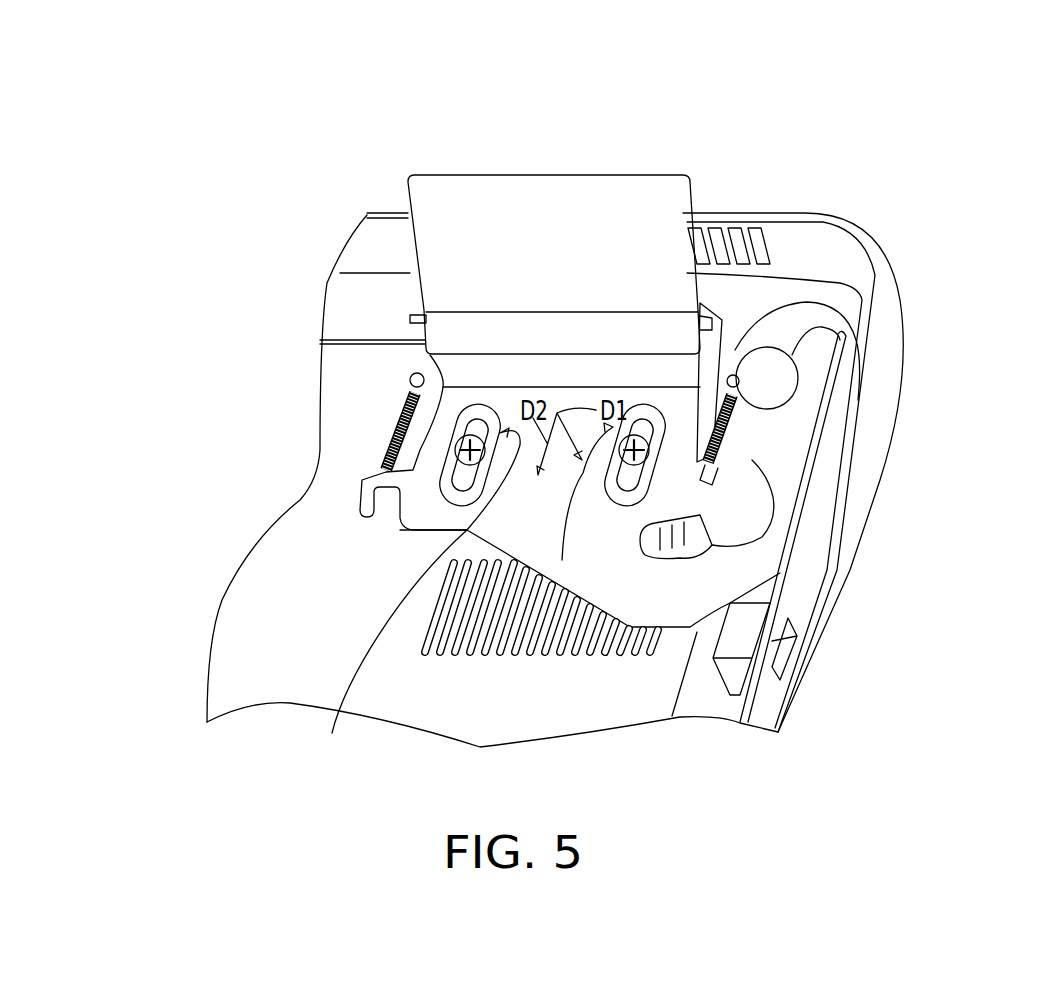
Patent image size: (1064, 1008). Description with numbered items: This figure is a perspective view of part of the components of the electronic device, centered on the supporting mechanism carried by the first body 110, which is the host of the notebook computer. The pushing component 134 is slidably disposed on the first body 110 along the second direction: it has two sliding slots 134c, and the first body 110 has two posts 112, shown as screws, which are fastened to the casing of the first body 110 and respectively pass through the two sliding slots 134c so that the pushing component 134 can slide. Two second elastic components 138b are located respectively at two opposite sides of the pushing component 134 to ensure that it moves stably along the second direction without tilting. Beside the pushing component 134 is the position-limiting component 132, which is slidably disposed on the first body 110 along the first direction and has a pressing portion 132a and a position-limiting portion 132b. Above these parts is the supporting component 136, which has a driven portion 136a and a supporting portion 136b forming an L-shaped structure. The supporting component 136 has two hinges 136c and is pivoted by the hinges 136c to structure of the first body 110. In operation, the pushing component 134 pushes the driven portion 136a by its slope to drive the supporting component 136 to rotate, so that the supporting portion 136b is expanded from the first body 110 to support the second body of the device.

The first body 110 is at (887, 333).
The post 112 is at (655, 425).
The position-limiting component 132 is at (897, 512).
The pressing portion 132a is at (777, 387).
The position-limiting portion 132b is at (760, 457).
The pushing component 134 is at (607, 570).
The sliding slot 134c is at (555, 590).
The supporting component 136 is at (558, 253).
The driven portion 136a is at (703, 318).
The supporting portion 136b is at (663, 198).
The hinge 136c is at (413, 320).
The second elastic component 138b is at (400, 433).